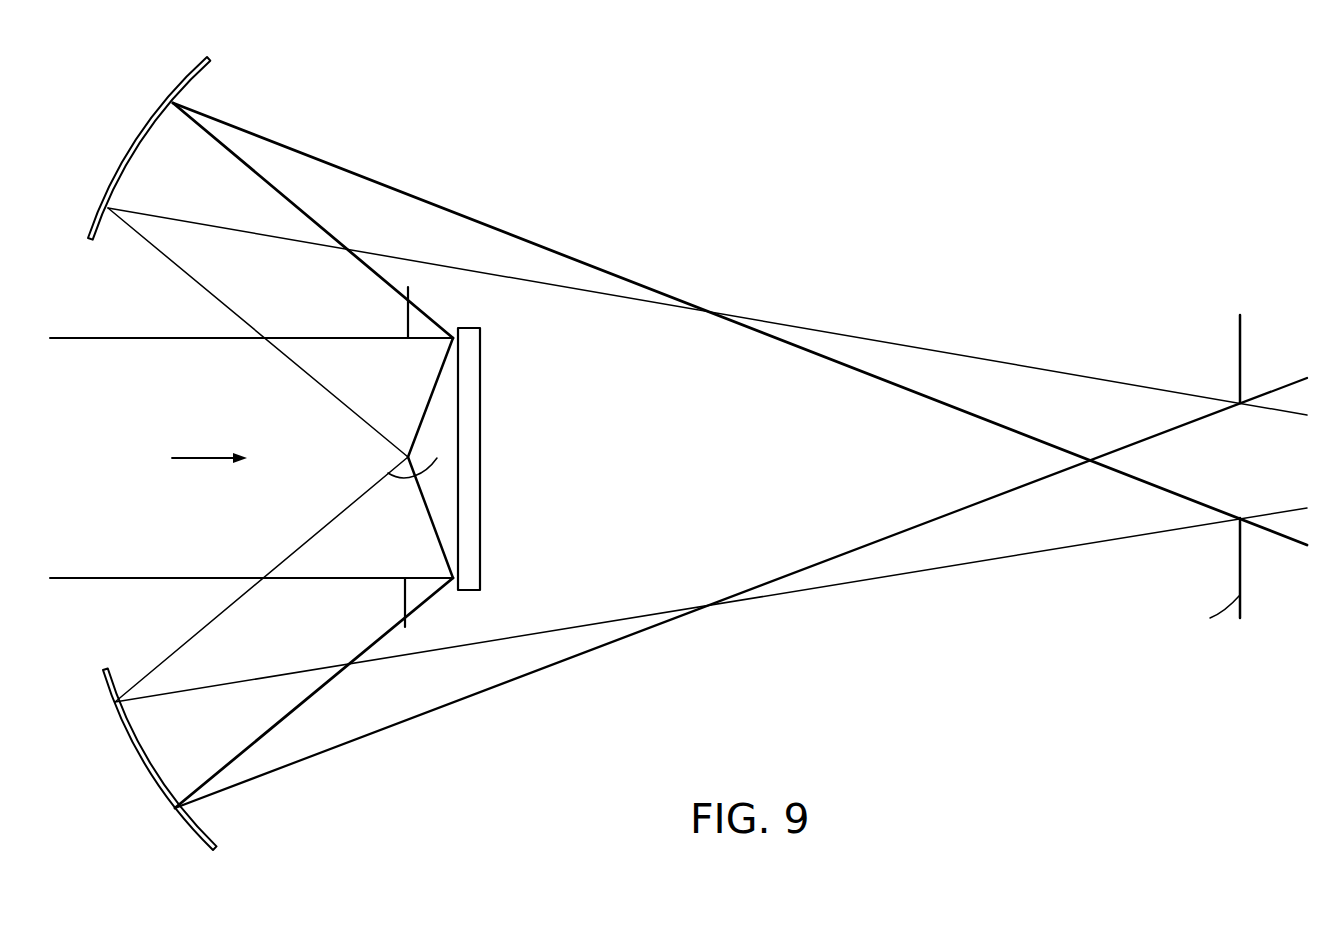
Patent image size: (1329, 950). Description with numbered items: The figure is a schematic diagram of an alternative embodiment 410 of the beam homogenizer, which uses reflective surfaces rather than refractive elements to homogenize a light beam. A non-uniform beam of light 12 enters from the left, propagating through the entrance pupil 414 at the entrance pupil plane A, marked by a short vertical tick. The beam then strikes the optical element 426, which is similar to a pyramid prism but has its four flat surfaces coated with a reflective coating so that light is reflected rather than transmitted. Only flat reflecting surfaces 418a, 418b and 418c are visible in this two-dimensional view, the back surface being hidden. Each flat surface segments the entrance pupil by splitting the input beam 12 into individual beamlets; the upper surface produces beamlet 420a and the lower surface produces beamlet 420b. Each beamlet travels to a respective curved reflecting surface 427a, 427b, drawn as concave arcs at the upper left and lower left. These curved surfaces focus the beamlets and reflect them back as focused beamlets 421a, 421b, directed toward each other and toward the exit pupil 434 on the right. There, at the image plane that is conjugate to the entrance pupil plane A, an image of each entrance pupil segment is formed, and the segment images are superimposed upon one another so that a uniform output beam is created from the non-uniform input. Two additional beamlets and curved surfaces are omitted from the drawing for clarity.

The curved reflecting surface 427a is at (185, 77).
The curved reflecting surface 427b is at (189, 835).
The beam of light 12 is at (187, 337).
The entrance pupil 414 is at (180, 457).
The beamlet 420a is at (366, 266).
The beamlet 420b is at (352, 661).
The focused beamlet 421a is at (397, 190).
The focused beamlet 421b is at (457, 700).
The optical element 426 is at (471, 329).
The flat reflecting surface 418a is at (433, 386).
The flat reflecting surface 418b is at (426, 511).
The flat reflecting surface 418c is at (388, 473).
The exit pupil 434 is at (1248, 452).
The beam homogenizer 410 is at (968, 145).
The entrance pupil plane A is at (405, 598).